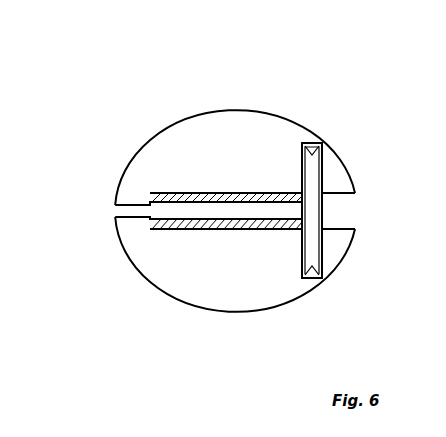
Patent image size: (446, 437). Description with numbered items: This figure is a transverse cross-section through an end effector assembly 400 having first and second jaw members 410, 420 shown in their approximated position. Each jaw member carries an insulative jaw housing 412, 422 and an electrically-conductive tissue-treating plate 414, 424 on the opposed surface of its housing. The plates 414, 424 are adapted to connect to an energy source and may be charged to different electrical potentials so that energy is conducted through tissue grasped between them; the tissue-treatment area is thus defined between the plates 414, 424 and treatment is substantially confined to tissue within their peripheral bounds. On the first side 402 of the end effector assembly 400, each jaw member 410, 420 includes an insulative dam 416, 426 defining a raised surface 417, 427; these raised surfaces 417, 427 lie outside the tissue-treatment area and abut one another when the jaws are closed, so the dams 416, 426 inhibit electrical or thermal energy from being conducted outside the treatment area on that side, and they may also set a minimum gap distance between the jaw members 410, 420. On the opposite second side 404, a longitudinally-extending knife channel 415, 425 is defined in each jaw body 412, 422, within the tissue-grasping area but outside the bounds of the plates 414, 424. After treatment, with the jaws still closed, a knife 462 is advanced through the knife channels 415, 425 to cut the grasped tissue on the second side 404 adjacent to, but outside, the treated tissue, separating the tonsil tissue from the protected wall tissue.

The end effector assembly 400 is at (337, 86).
The first side 402 is at (112, 206).
The second side 404 is at (369, 203).
The first jaw member 410 is at (165, 117).
The jaw housing 412 is at (226, 127).
The tissue-treating plate 414 is at (262, 191).
The knife channel 415 is at (315, 170).
The insulative dam 416 is at (124, 192).
The raised surface 417 is at (132, 214).
The second jaw member 420 is at (222, 323).
The jaw housing 422 is at (185, 291).
The tissue-treating plate 424 is at (274, 231).
The knife channel 425 is at (318, 241).
The insulative dam 426 is at (125, 229).
The raised surface 427 is at (141, 205).
The knife 462 is at (325, 211).